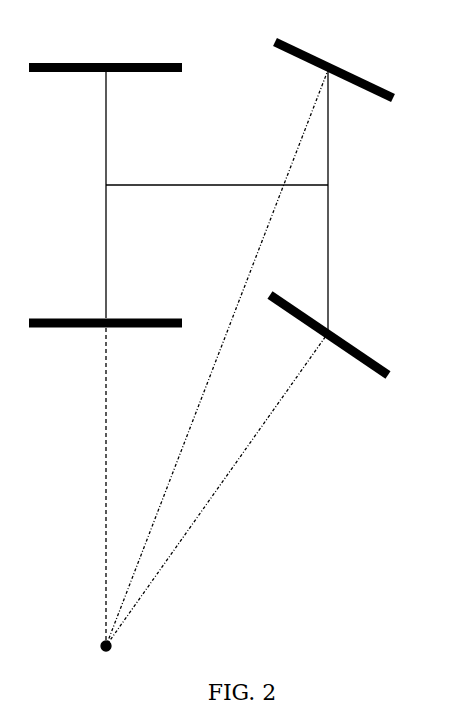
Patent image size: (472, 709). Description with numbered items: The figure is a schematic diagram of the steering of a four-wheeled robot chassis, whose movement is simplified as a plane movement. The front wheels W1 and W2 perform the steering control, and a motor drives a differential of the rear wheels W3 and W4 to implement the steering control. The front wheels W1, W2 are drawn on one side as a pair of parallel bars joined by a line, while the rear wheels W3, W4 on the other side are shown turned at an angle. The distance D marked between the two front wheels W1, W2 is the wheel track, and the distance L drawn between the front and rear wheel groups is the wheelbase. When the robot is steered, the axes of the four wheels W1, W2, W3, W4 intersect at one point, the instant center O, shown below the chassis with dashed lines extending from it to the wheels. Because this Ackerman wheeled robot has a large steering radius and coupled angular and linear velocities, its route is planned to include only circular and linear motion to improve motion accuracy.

The front wheel W1 is at (105, 47).
The front wheel W2 is at (105, 346).
The rear wheel W3 is at (329, 335).
The rear wheel W4 is at (334, 62).
The wheel track D is at (81, 195).
The wheelbase L is at (217, 170).
The instant center O is at (214, 360).